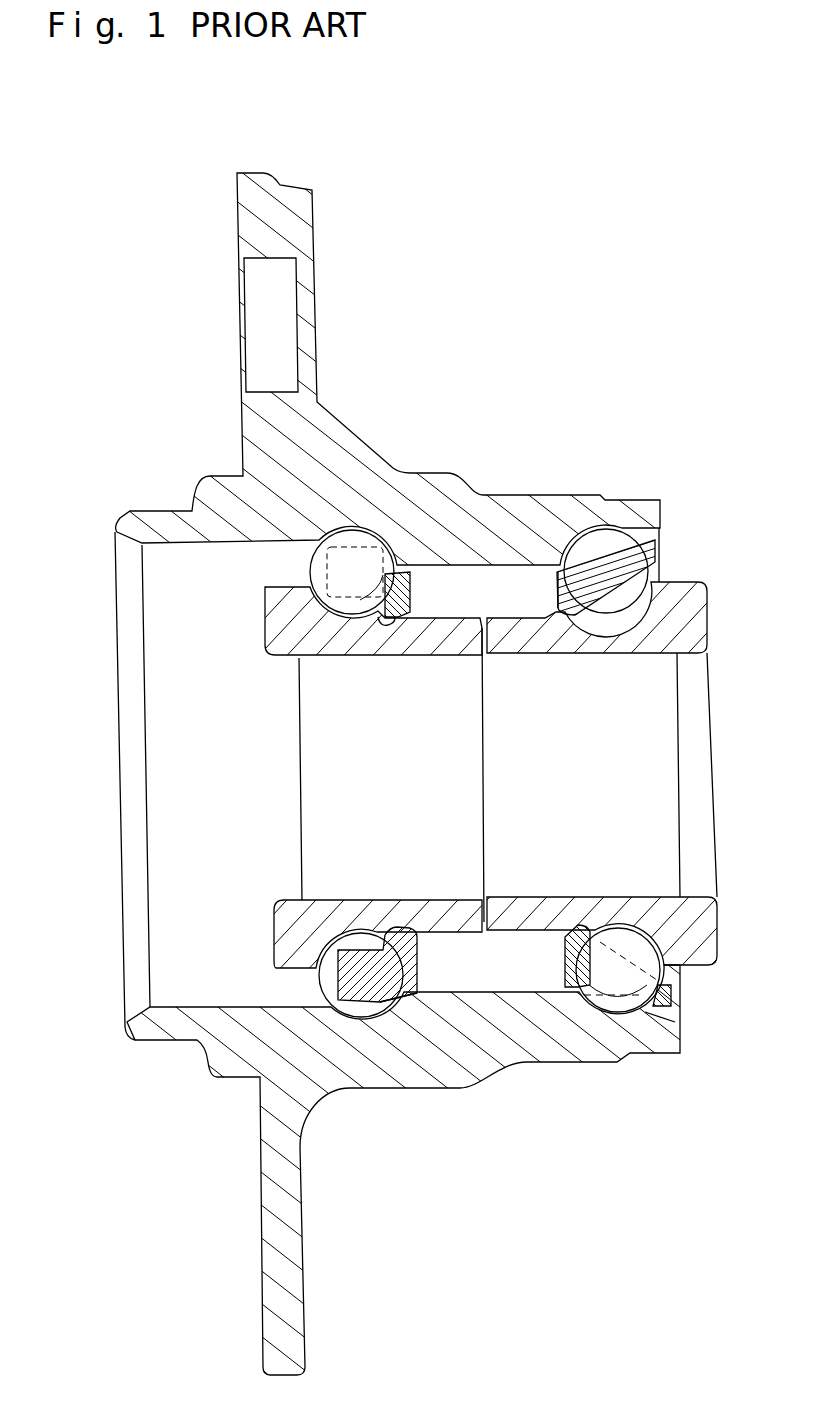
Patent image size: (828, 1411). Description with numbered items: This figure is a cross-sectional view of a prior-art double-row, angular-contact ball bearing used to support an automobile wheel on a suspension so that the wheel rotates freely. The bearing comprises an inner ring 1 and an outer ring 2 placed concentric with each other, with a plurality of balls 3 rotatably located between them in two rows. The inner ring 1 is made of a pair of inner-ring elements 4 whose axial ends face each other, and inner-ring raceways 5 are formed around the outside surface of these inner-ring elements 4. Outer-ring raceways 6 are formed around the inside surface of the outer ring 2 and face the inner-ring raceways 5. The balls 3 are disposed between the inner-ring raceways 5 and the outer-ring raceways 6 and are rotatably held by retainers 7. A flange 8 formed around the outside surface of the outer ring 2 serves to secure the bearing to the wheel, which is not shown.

The inner ring 1 is at (160, 458).
The outer ring 2 is at (432, 473).
The balls 3 is at (352, 528).
The inner-ring elements 4 is at (517, 655).
The inner-ring raceways 5 is at (620, 612).
The outer-ring raceways 6 is at (594, 527).
The retainers 7 is at (563, 565).
The flange 8 is at (247, 223).